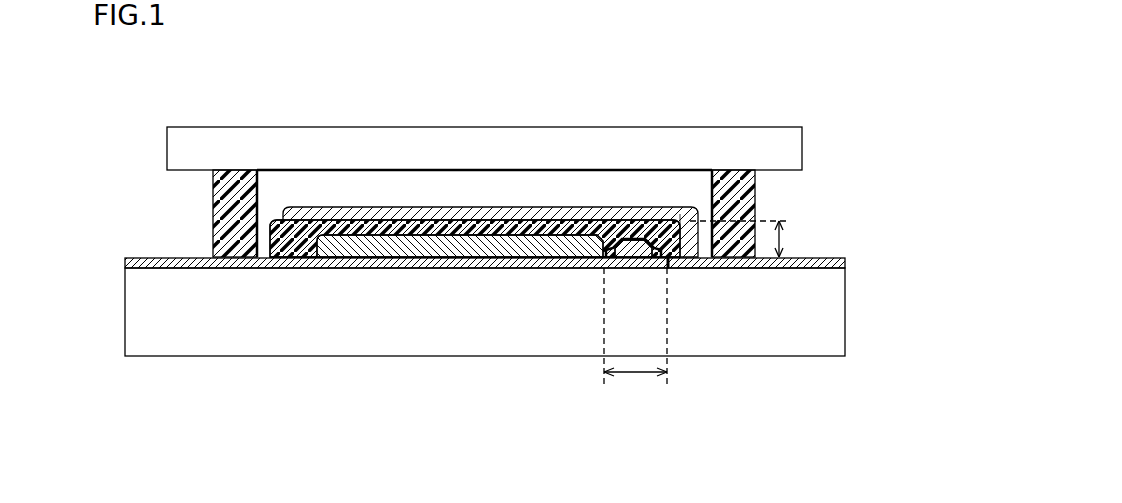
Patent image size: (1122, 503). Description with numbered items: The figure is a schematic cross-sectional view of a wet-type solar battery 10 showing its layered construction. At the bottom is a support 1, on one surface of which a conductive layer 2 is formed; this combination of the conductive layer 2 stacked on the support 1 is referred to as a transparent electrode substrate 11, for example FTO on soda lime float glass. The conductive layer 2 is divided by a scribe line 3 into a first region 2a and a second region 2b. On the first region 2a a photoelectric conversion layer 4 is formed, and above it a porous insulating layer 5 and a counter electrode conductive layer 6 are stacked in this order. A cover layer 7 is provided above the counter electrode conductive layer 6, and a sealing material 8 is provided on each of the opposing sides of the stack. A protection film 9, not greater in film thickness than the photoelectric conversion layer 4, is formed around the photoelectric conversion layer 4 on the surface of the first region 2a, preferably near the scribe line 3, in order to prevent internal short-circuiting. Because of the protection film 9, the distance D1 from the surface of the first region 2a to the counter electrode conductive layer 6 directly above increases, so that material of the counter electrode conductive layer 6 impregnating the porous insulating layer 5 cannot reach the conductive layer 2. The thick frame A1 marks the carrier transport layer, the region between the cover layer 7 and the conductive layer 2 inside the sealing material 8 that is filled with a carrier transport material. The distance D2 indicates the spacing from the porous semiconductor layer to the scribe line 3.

The support 1 is at (828, 308).
The conductive layer 2 is at (505, 366).
The first region 2a is at (579, 268).
The second region 2b is at (756, 351).
The scribe line 3 is at (668, 265).
The photoelectric conversion layer 4 is at (463, 256).
The porous insulating layer 5 is at (487, 219).
The counter electrode conductive layer 6 is at (554, 208).
The cover layer 7 is at (785, 148).
The sealing material 8 is at (228, 186).
The protection film 9 is at (629, 249).
The wet-type solar battery 10 is at (779, 88).
The transparent electrode substrate 11 is at (889, 252).
The thick frame A1 is at (681, 211).
The distance D1 is at (753, 239).
The distance D2 is at (635, 334).